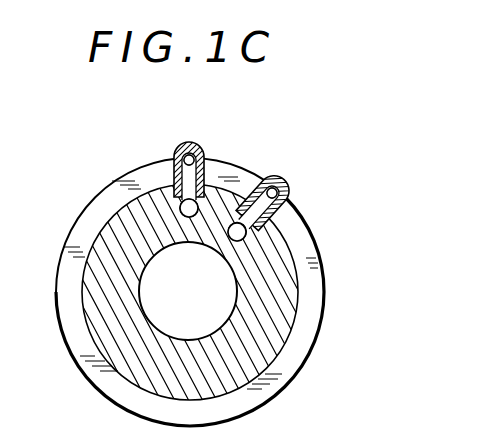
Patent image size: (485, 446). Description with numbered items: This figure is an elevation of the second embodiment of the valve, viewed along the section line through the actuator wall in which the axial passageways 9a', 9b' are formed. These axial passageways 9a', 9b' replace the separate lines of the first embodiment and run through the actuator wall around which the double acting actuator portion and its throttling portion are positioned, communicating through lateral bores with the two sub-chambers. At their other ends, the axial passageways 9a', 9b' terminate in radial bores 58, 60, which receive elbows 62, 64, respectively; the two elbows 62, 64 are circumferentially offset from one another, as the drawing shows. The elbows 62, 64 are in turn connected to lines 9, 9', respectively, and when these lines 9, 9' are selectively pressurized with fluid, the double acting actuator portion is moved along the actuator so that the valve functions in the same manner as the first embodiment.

The line 9 is at (171, 132).
The line 9' is at (300, 176).
The axial passageway 9a' is at (174, 244).
The axial passageway 9b' is at (213, 268).
The radial bore 58 is at (212, 196).
The radial bore 60 is at (295, 261).
The elbow 62 is at (203, 152).
The elbow 64 is at (291, 192).